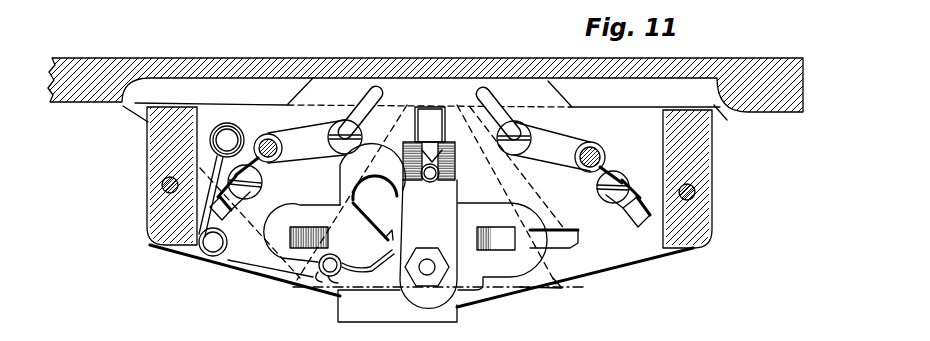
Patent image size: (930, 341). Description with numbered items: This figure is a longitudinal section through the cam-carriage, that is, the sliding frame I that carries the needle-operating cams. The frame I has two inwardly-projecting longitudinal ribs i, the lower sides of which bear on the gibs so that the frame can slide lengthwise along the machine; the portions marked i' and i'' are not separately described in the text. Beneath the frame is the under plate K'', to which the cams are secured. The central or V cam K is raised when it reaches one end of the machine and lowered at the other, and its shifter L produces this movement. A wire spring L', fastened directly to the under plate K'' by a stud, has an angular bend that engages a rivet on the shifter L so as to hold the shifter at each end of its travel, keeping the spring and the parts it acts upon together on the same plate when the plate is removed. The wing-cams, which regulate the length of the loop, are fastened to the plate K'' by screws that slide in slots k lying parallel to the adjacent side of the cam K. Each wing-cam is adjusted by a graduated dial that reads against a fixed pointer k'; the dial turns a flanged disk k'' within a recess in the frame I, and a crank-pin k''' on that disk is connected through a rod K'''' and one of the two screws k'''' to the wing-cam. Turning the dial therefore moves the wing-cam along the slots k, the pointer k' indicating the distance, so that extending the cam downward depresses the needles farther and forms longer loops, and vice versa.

The sliding frame I is at (172, 54).
The fixed pointer k' is at (421, 163).
The flanged disk k'' is at (436, 207).
The crank-pin k''' is at (438, 132).
The screws k'''' is at (427, 158).
The rod K'''' is at (429, 158).
The slots k is at (430, 196).
The longitudinal ribs i is at (217, 197).
The pin i' is at (326, 293).
The pivot pin i'' is at (311, 277).
The shifter L is at (405, 217).
The wire spring L' is at (270, 274).
The V-cam K is at (421, 279).
The under plate K'' is at (582, 242).